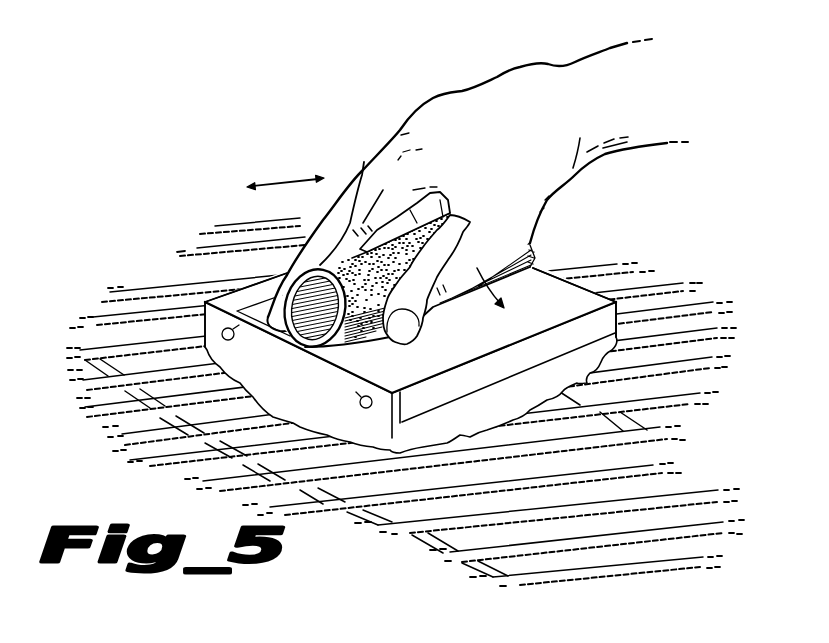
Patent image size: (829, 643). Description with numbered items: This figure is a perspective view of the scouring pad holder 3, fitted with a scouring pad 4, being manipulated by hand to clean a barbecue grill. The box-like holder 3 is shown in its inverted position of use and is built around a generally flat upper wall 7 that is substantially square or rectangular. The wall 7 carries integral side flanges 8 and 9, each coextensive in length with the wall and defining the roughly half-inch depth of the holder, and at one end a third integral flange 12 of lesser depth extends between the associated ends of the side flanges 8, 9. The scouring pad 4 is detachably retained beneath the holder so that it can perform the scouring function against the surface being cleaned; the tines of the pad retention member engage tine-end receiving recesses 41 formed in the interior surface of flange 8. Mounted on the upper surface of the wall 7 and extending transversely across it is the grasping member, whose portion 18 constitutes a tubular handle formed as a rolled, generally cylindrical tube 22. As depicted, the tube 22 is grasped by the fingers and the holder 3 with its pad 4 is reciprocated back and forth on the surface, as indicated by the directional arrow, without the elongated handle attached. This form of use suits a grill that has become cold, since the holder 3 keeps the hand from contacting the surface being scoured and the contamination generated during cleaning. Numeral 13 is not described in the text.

The frame 13 is at (205, 300).
The cylindrical tube 22 is at (396, 282).
The scouring pad holder 3 is at (483, 277).
The side flange 9 is at (535, 264).
The upper wall 7 is at (486, 345).
The third integral flange 12 is at (505, 389).
The scouring pad 4 is at (543, 385).
The tubular handle portion 18 is at (355, 341).
The tine-end receiving recesses 41 is at (297, 367).
The side flange 8 is at (309, 384).